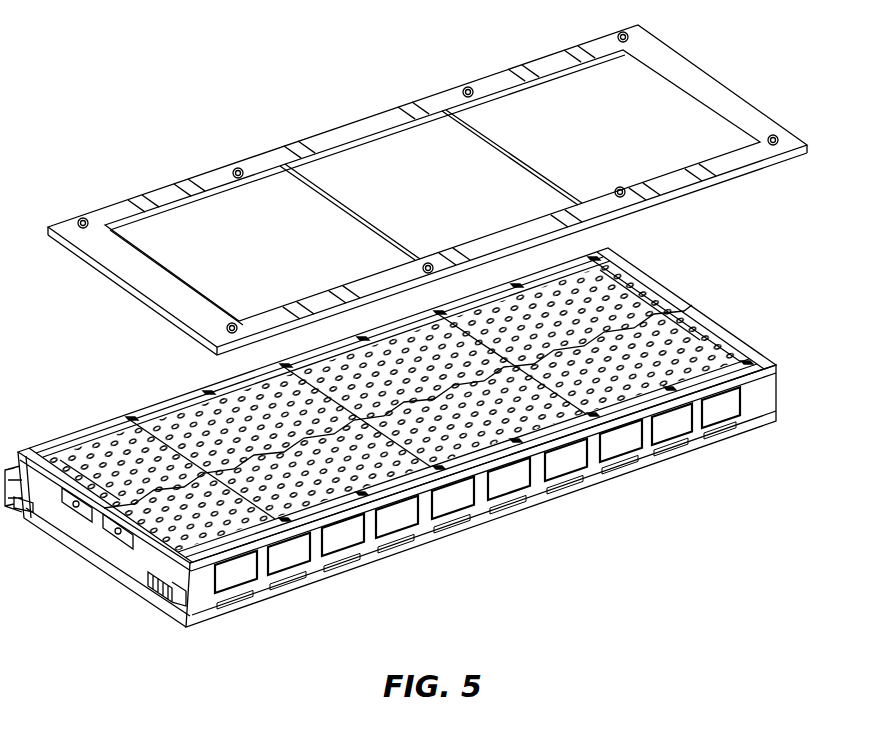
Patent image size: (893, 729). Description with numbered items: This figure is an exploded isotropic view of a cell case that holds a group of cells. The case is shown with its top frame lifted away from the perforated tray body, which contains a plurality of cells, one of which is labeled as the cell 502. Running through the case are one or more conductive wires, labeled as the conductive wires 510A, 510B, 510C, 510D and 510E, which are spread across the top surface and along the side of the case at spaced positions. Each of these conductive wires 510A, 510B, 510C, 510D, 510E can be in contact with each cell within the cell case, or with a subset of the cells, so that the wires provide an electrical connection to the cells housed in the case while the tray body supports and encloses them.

The cell 502 is at (751, 356).
The conductive wire 510A is at (670, 303).
The conductive wire 510B is at (625, 442).
The conductive wire 510C is at (449, 498).
The conductive wire 510D is at (283, 557).
The conductive wire 510E is at (85, 444).